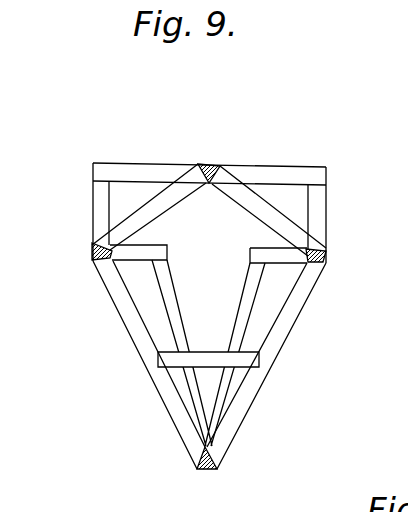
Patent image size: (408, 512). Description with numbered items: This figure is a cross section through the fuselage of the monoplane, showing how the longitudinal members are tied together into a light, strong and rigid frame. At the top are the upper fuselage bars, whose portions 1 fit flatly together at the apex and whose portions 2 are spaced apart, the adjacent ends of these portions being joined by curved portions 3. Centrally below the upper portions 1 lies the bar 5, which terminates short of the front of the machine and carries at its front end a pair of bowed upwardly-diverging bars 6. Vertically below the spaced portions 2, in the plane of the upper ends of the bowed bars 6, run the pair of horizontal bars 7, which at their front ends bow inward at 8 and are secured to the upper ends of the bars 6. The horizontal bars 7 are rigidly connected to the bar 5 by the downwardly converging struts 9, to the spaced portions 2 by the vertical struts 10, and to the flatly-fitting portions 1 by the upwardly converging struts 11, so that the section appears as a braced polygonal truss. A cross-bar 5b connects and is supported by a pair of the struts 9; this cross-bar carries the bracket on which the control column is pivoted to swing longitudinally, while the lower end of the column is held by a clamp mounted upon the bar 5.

The flatly-fitting bar portions 1 is at (217, 163).
The spaced-apart bar portions 2 is at (100, 173).
The curved portions 3 is at (148, 181).
The bar 5 is at (212, 471).
The cross-bar 5b is at (202, 360).
The bowed upwardly-diverging bars 6 is at (187, 393).
The horizontal bars 7 is at (90, 251).
The inward bows 8 is at (138, 246).
The downwardly converging struts 9 is at (135, 347).
The vertical struts 10 is at (98, 203).
The upwardly converging struts 11 is at (257, 210).